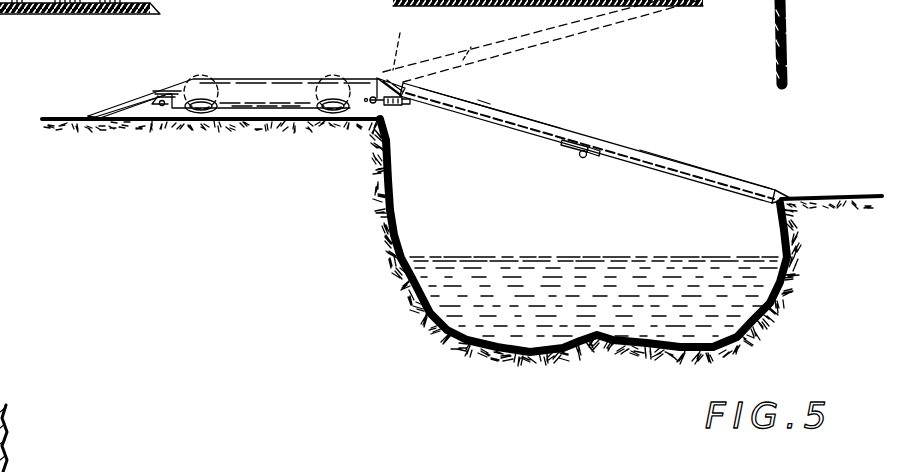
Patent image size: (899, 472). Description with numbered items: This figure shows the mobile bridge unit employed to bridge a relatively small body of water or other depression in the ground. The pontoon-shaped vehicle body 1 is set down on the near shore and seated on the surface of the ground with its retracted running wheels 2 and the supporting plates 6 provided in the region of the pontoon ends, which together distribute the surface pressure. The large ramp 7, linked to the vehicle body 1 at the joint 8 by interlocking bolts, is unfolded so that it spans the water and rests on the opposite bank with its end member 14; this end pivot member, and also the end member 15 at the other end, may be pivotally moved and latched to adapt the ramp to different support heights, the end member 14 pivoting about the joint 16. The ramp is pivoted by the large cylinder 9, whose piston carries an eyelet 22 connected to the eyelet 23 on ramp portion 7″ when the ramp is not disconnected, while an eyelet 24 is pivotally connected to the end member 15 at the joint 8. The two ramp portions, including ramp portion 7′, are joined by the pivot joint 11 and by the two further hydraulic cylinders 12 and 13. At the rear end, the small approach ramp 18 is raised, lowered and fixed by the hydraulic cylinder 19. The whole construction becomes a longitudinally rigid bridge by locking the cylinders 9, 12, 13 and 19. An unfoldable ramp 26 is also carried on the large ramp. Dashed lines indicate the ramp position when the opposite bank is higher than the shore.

The vehicle body 1 is at (254, 82).
The running wheels 2 is at (194, 122).
The supporting plates 6 is at (160, 124).
The ramp 7 is at (579, 101).
The ramp portion 7′ is at (690, 167).
The joint 8 is at (368, 69).
The eyelet 24 is at (376, 77).
The cylinder 9 is at (393, 106).
The pivot joint 11 is at (583, 158).
The hydraulic cylinder 12 is at (560, 151).
The hydraulic cylinder 13 is at (603, 157).
The end pivot member 14 is at (790, 198).
The end pivot member 15 is at (398, 68).
The joint 16 is at (776, 189).
The approach ramp 18 is at (110, 114).
The hydraulic cylinder 19 is at (153, 97).
The eyelet 22 is at (434, 119).
The eyelet 23 is at (412, 105).
The unfoldable ramp 26 is at (483, 108).